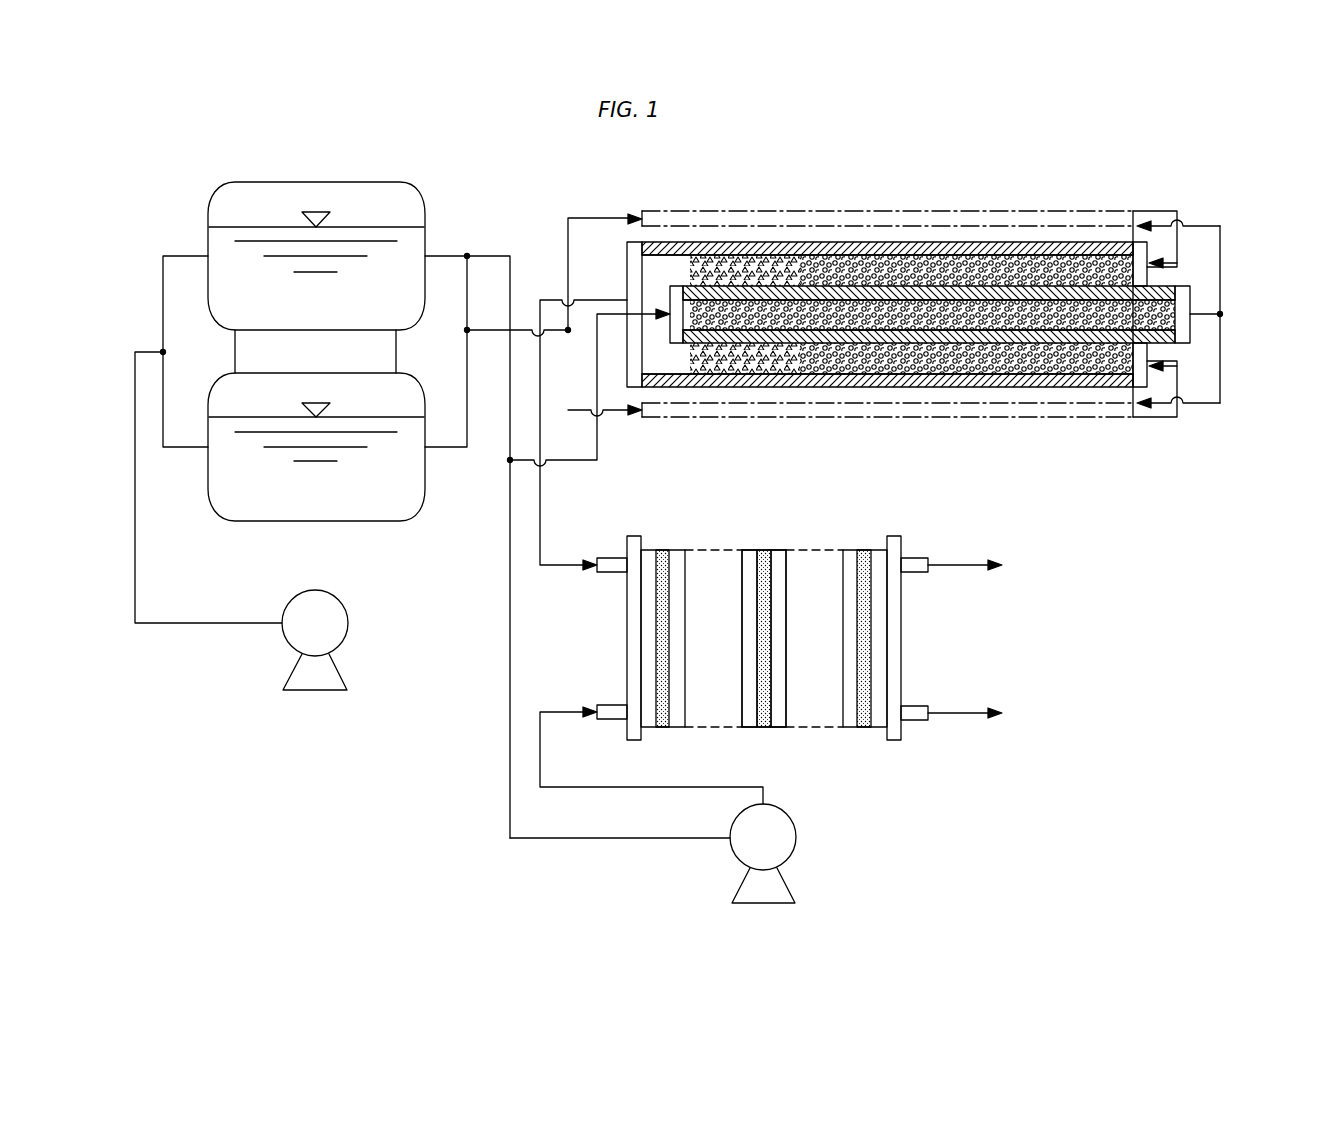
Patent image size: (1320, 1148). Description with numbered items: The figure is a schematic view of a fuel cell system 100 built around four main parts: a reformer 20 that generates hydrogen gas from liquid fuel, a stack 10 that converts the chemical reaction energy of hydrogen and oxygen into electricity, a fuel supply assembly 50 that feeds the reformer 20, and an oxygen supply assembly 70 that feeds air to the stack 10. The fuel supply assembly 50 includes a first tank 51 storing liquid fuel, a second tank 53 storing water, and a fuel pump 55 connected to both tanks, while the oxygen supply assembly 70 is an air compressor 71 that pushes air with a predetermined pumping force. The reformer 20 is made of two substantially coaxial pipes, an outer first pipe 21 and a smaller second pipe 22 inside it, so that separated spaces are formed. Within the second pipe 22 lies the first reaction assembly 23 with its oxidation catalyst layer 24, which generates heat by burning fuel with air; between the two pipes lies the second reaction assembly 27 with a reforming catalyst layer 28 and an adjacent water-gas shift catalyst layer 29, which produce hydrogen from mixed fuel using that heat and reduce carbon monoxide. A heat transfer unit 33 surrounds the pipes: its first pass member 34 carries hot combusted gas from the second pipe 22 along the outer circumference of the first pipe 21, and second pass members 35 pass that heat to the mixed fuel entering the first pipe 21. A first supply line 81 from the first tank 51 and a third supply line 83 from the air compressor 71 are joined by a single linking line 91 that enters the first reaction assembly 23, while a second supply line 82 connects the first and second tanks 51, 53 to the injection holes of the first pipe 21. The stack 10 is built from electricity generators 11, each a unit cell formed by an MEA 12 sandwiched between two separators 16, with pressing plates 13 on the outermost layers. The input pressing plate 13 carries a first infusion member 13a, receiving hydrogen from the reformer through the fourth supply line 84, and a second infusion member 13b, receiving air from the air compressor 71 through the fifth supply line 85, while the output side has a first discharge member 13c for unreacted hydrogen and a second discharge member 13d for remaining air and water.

The fuel cell system 100 is at (525, 137).
The stack 10 is at (845, 524).
The electricity generator 11 is at (735, 503).
The MEA 12 is at (764, 550).
The separator 16 is at (752, 550).
The pressing plate 13 is at (626, 640).
The first infusion member 13a is at (614, 558).
The second infusion member 13b is at (614, 719).
The first discharge member 13c is at (911, 720).
The second discharge member 13d is at (917, 558).
The reformer 20 is at (1232, 244).
The first pipe 21 is at (716, 244).
The second pipe 22 is at (883, 296).
The first reaction assembly 23 is at (929, 162).
The oxidation catalyst layer 24 is at (920, 314).
The second reaction assembly 27 is at (787, 162).
The reforming catalyst layer 28 is at (781, 256).
The water-gas shift catalyst layer 29 is at (743, 265).
The heat transfer unit 33 is at (1090, 210).
The first pass member 34 is at (1000, 236).
The second pass member 35 is at (1037, 211).
The fuel supply assembly 50 is at (200, 679).
The first tank 51 is at (316, 182).
The second tank 53 is at (315, 521).
The fuel pump 55 is at (348, 623).
The oxygen supply assembly 70 is at (808, 863).
The air compressor 71 is at (796, 838).
The first supply line 81 is at (492, 255).
The second supply line 82 is at (492, 331).
The third supply line 83 is at (510, 655).
The fourth supply line 84 is at (540, 520).
The fifth supply line 85 is at (680, 788).
The linking line 91 is at (574, 461).